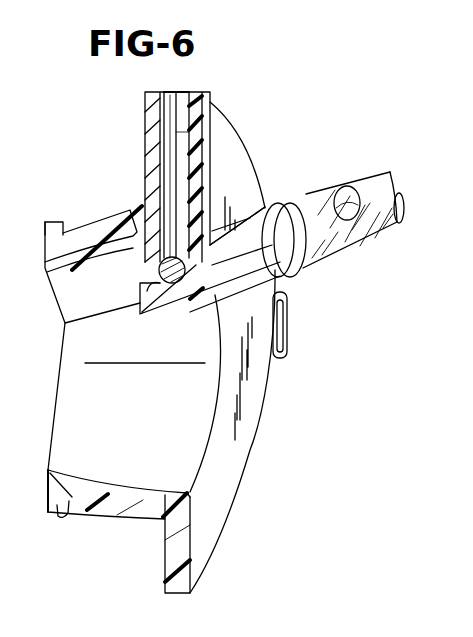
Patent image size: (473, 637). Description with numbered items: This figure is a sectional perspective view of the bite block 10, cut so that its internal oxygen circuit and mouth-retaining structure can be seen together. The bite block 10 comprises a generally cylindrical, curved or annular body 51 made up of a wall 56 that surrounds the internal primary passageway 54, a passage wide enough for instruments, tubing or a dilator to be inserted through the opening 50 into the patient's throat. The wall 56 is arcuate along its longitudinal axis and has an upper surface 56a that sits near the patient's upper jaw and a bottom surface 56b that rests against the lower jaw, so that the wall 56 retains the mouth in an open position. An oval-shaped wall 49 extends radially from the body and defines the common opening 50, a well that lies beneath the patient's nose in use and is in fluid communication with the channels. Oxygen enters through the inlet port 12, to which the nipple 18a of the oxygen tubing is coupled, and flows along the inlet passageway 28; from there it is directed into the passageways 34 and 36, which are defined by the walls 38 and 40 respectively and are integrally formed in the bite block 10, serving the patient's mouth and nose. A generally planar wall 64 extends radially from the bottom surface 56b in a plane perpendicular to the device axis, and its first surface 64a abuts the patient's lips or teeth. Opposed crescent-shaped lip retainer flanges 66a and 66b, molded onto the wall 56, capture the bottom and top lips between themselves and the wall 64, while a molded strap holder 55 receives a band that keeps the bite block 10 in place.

The bite block 10 is at (257, 106).
The inlet port 12 is at (250, 214).
The nipple 18a is at (304, 186).
The inlet passageway 28 is at (372, 172).
The mouth passageway 34 is at (133, 281).
The nose passageway 36 is at (173, 150).
The wall defining mouth passageway 38 is at (137, 313).
The wall defining nose passageway 40 is at (165, 171).
The oval-shaped wall 49 is at (165, 100).
The common opening 50 is at (186, 85).
The annular body 51 is at (90, 520).
The primary passageway 54 is at (205, 400).
The strap holder 55 is at (287, 343).
The wall 56 is at (118, 492).
The upper surface of wall 56a is at (66, 220).
The bottom surface of wall 56b is at (45, 229).
The planar wall 64 is at (236, 478).
The first surface of planar wall 64a is at (166, 582).
The lip retainer flange 66a is at (62, 500).
The lip retainer flange 66b is at (48, 229).